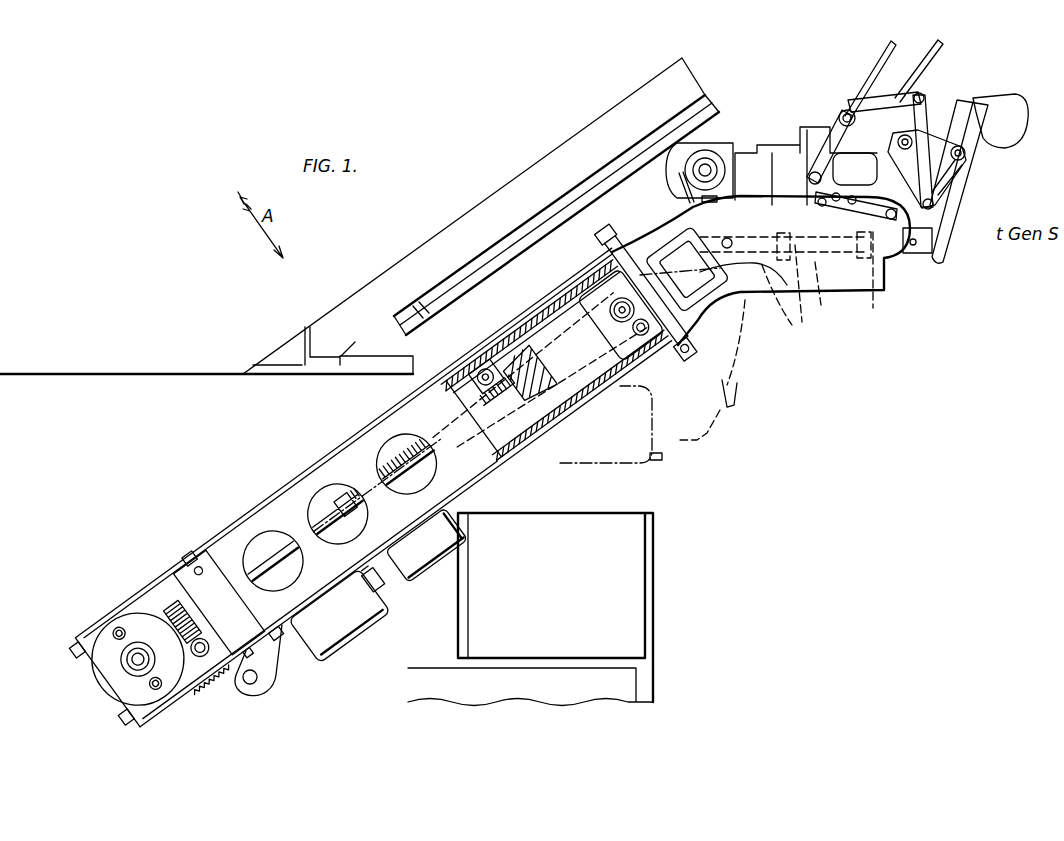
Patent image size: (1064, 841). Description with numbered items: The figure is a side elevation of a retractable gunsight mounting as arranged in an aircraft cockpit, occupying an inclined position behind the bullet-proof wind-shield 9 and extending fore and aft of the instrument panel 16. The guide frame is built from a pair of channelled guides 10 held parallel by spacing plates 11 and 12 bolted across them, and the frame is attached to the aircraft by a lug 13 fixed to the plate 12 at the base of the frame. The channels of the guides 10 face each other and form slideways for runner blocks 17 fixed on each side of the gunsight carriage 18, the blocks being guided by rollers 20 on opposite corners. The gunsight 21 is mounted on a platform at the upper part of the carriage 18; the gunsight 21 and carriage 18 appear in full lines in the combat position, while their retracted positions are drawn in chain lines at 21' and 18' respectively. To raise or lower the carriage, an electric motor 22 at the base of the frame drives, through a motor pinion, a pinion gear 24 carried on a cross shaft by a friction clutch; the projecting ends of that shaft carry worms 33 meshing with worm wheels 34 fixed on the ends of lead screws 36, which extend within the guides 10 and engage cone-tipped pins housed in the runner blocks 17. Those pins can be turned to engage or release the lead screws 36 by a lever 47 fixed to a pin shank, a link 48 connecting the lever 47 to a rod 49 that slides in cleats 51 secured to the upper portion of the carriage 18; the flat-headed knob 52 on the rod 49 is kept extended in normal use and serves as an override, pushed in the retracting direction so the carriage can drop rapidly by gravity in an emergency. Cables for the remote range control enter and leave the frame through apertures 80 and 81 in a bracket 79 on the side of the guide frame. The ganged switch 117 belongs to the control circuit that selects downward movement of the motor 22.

The bullet-proof wind-shield 9 is at (512, 200).
The spacing plate 11 is at (318, 466).
The channelled guides 10 is at (632, 367).
The lead screws 36 is at (332, 518).
The electric motor 22 is at (107, 663).
The worm wheels 34 is at (173, 607).
The worms 33 is at (196, 657).
The pinion gear 24 is at (220, 678).
The bracket 79 is at (210, 592).
The aperture 80 is at (205, 572).
The aperture 81 is at (277, 640).
The lug 13 is at (260, 693).
The spacing plate 12 is at (391, 588).
The instrument panel 16 is at (653, 612).
The runner blocks 17 is at (550, 347).
The rollers 20 is at (662, 354).
The lever 47 is at (603, 300).
The link 48 is at (668, 235).
The ganged switch 117 is at (692, 238).
The gunsight carriage 18 is at (761, 277).
The cleats 51 is at (873, 300).
The rod 49 is at (806, 292).
The knob 52 is at (935, 262).
The gunsight 21 is at (979, 178).
The gunsight in retracted position 21' is at (666, 381).
The carriage in retracted position 18' is at (517, 468).